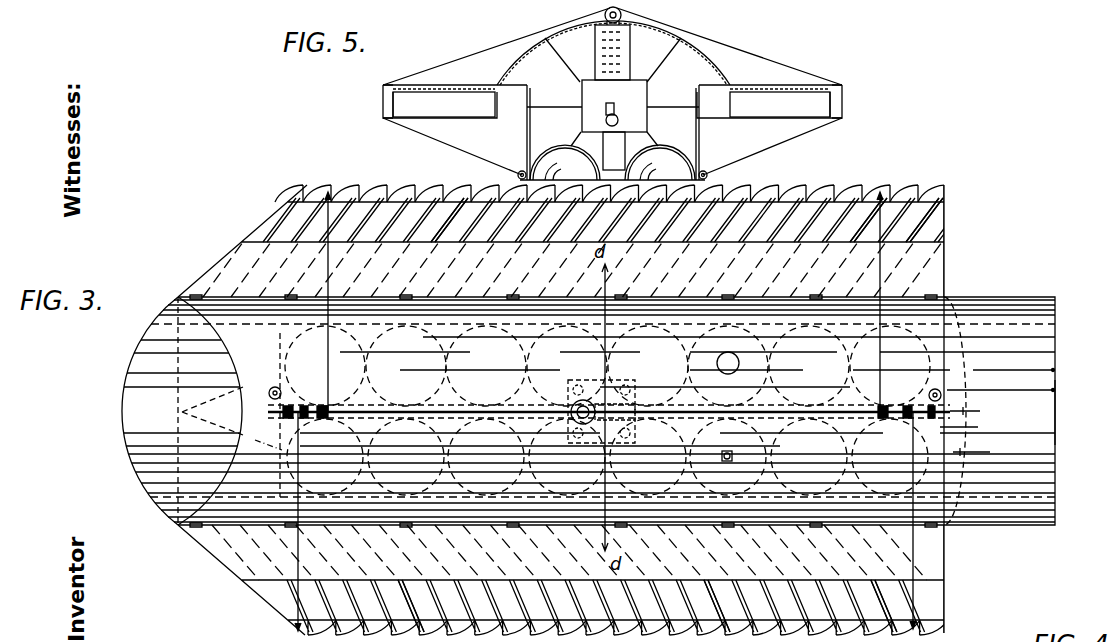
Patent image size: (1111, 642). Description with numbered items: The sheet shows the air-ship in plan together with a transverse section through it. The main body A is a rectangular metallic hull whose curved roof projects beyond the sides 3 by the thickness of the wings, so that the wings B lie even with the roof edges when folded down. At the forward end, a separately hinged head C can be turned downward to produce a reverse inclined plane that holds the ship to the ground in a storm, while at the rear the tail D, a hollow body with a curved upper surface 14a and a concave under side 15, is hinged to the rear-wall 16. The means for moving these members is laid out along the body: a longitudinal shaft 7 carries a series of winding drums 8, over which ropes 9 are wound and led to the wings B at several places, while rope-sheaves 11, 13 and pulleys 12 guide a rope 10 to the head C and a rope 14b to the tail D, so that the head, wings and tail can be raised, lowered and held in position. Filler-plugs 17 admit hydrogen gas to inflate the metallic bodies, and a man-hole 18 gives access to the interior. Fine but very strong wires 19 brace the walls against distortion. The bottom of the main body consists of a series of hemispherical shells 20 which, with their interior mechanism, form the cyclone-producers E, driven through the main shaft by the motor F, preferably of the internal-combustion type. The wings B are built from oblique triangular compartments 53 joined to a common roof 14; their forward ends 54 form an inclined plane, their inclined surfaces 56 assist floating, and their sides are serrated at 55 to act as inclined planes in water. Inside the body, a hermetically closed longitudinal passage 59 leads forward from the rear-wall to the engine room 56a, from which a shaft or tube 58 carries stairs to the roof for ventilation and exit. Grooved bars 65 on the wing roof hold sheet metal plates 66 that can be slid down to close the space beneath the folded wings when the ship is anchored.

In FIG. 5, the sides 3 is at (612, 132).
In FIG. 3, the longitudinal shaft 7 is at (268, 412).
In FIG. 3, the winding drums 8 is at (609, 399).
In FIG. 3, the ropes 9 is at (605, 411).
In FIG. 5, the ropes 9 is at (483, 55).
In FIG. 3, the rope 10 is at (157, 388).
In FIG. 3, the rope-sheave 11 is at (261, 415).
In FIG. 3, the pulleys 12 is at (272, 383).
In FIG. 3, the rope-sheave 13 is at (970, 430).
In FIG. 3, the common roof 14 is at (433, 415).
In FIG. 5, the common roof 14 is at (450, 84).
In FIG. 3, the upper surface 14a is at (1060, 412).
In FIG. 3, the rope 14b is at (1001, 378).
In FIG. 3, the concave under side 15 is at (981, 453).
In FIG. 3, the rear-wall 16 is at (950, 299).
In FIG. 3, the filler-plugs 17 is at (738, 464).
In FIG. 3, the man-hole 18 is at (728, 374).
In FIG. 5, the wires 19 is at (660, 130).
In FIG. 5, the hemispherical shells 20 is at (612, 162).
In FIG. 5, the compartments 53 is at (392, 107).
In FIG. 3, the forward ends 54 is at (236, 230).
In FIG. 3, the serrated sides 55 is at (441, 193).
In FIG. 5, the serrated sides 55 is at (382, 90).
In FIG. 5, the inclined surfaces 56 is at (611, 103).
In FIG. 5, the engine room 56a is at (614, 106).
In FIG. 5, the shaft or tube 58 is at (613, 46).
In FIG. 5, the longitudinal passage 59 is at (612, 97).
In FIG. 3, the grooved bars 65 is at (815, 577).
In FIG. 3, the sheet metal plates 66 is at (814, 415).
In FIG. 3, the main body A is at (588, 409).
In FIG. 3, the wings B is at (583, 408).
In FIG. 5, the wings B is at (439, 126).
In FIG. 3, the head C is at (113, 408).
In FIG. 3, the tail D is at (998, 545).
In FIG. 3, the cyclone-producers E is at (607, 410).
In FIG. 3, the motor F is at (601, 411).
In FIG. 5, the motor F is at (619, 111).